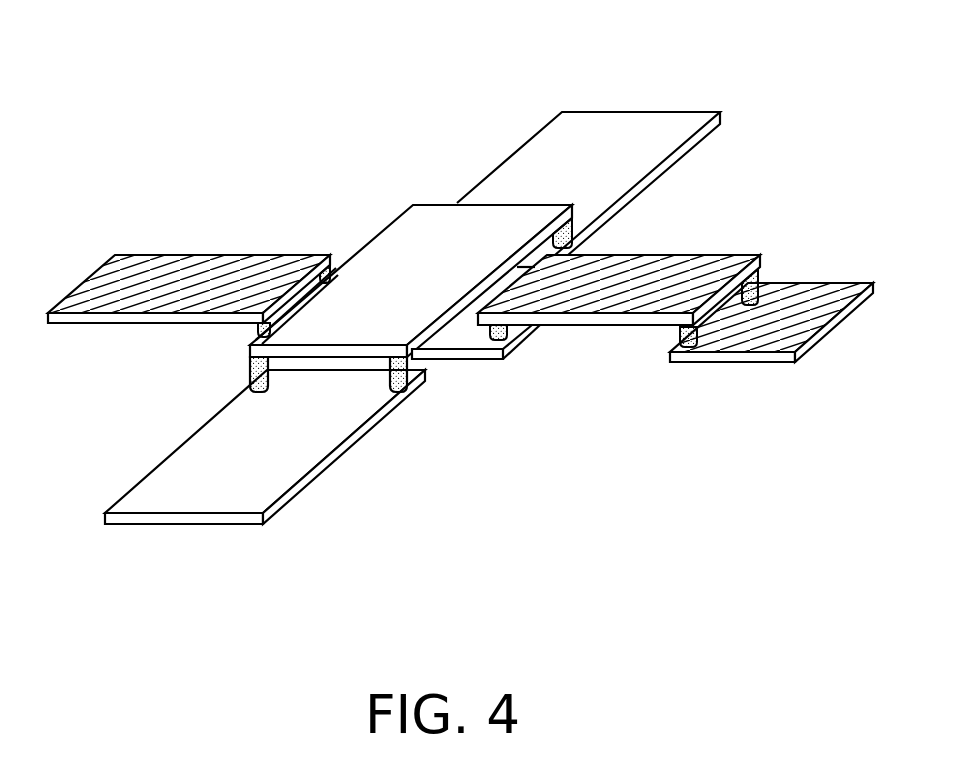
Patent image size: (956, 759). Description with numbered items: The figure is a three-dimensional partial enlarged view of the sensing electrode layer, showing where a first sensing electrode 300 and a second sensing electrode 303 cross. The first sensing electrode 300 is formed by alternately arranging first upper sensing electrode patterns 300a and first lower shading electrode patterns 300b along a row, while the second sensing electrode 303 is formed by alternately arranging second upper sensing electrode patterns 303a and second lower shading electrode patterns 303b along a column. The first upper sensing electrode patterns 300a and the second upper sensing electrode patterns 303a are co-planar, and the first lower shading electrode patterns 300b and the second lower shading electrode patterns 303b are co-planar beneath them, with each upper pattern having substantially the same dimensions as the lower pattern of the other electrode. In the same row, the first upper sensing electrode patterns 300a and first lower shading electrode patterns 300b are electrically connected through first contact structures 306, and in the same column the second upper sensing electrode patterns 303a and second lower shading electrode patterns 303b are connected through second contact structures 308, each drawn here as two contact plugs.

The first sensing electrode 300 is at (460, 371).
The first upper sensing electrode pattern 300a is at (597, 305).
The first lower shading electrode pattern 300b is at (470, 336).
The second sensing electrode 303 is at (412, 272).
The second upper sensing electrode pattern 303a is at (393, 255).
The second lower shading electrode pattern 303b is at (510, 193).
The first contact structure 306 is at (767, 281).
The second contact structure 308 is at (250, 361).